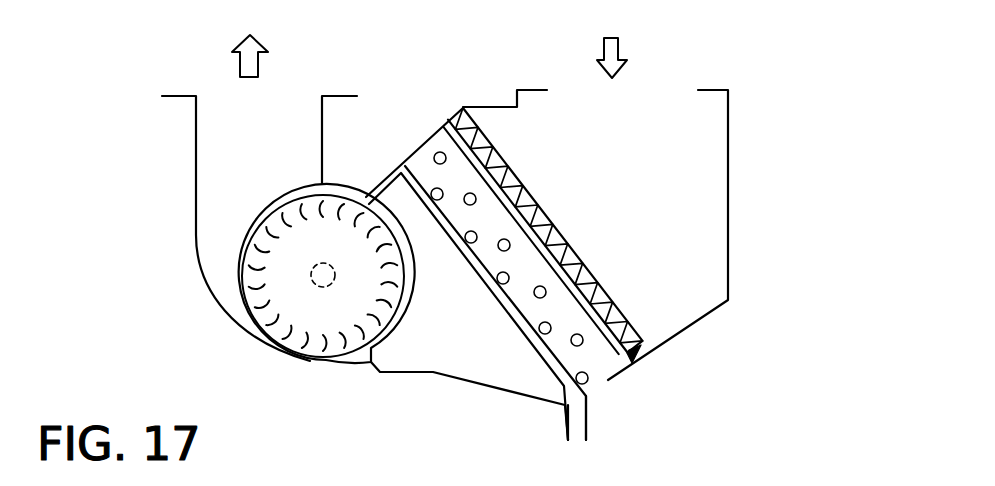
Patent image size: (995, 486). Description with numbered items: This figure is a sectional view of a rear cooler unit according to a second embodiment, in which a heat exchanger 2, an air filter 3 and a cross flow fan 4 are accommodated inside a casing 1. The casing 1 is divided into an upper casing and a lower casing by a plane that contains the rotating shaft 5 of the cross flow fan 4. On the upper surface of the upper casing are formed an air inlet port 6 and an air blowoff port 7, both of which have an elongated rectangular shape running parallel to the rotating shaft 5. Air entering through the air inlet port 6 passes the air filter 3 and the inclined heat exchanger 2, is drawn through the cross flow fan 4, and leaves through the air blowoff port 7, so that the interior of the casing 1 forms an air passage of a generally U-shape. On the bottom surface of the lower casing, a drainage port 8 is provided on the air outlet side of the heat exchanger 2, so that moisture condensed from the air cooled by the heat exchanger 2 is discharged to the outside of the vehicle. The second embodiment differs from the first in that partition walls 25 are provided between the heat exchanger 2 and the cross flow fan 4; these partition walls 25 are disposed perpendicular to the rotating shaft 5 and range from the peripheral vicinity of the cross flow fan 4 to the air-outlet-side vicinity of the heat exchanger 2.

The casing 1 is at (730, 157).
The heat exchanger 2 is at (594, 366).
The air filter 3 is at (633, 333).
The cross flow fan 4 is at (290, 356).
The rotating shaft 5 is at (312, 290).
The air inlet port 6 is at (655, 92).
The air blowoff port 7 is at (287, 104).
The drainage port 8 is at (587, 422).
The partition walls 25 is at (477, 357).